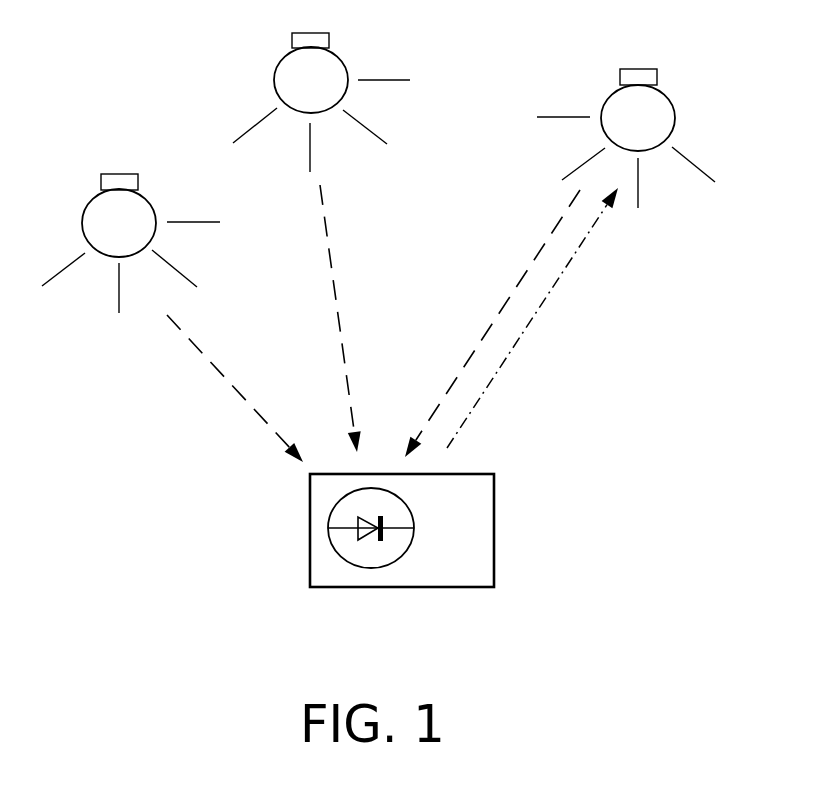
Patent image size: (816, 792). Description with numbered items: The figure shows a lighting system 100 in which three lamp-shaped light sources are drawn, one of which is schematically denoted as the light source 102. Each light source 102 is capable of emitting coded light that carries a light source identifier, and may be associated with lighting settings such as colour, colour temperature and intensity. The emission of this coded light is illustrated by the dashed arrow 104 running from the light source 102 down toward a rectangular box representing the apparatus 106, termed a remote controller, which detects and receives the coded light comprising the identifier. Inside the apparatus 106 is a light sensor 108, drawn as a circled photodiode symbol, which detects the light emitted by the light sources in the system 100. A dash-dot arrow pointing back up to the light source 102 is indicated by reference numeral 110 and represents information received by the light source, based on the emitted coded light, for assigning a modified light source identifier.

The lighting system 100 is at (142, 125).
The light source 102 is at (606, 100).
The arrow 104 is at (535, 260).
The apparatus 106 is at (310, 527).
The light sensor 108 is at (360, 540).
The received information 110 is at (537, 313).